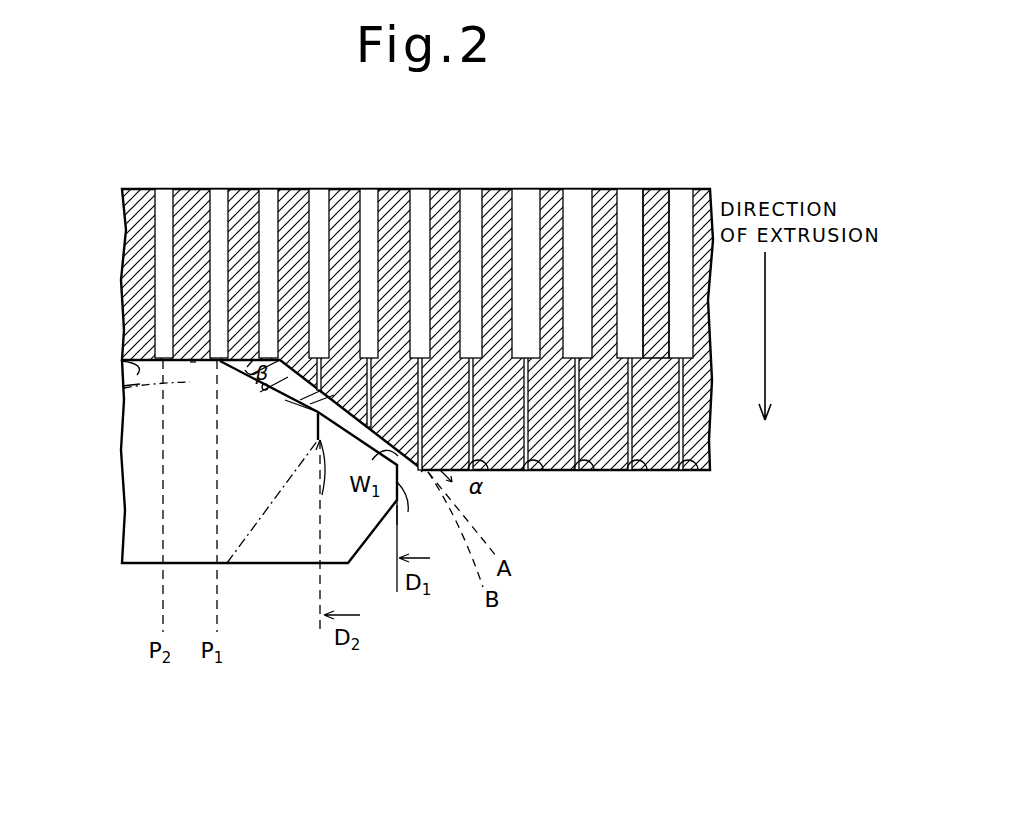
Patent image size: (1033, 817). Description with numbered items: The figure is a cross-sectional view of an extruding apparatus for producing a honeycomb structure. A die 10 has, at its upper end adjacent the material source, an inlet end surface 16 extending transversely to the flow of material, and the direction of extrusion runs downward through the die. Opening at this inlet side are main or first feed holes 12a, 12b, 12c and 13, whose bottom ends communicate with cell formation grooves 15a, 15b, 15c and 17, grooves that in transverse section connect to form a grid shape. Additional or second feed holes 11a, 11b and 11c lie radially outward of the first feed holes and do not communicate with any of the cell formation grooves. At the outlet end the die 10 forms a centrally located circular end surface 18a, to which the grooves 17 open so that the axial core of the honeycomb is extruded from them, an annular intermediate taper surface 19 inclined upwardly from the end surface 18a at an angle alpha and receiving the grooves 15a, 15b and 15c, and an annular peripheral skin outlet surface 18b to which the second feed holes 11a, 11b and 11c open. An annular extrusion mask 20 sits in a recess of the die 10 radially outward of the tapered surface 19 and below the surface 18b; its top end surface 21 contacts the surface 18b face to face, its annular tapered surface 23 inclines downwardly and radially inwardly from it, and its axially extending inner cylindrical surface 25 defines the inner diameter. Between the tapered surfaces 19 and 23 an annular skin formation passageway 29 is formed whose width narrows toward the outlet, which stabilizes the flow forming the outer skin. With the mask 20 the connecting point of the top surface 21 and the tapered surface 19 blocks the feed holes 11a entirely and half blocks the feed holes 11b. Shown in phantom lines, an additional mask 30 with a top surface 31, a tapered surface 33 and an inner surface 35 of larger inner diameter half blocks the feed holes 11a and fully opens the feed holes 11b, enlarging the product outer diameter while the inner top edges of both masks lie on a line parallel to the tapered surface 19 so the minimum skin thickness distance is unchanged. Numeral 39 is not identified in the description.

The die 10 is at (137, 188).
The second feed hole 11a is at (167, 189).
The second feed hole 11b is at (218, 189).
The second feed hole 11c is at (267, 189).
The first feed hole 12a is at (318, 189).
The first feed hole 12b is at (366, 189).
The first feed hole 12c is at (419, 189).
The first feed hole 13 is at (471, 189).
The inlet end surface 16 is at (672, 189).
The cell formation groove 17 is at (533, 470).
The circular end surface 18a is at (570, 470).
The annular peripheral surface 18b is at (122, 370).
The intermediate taper surface 19 is at (428, 472).
The extrusion mask 20 is at (253, 566).
The top end surface 21 is at (201, 366).
The annular tapered surface 23 is at (288, 377).
The inner cylindrical surface 25 is at (396, 520).
The skin formation passageway 29 is at (322, 390).
The additional mask 30 is at (132, 568).
The top surface 31 is at (123, 338).
The tapered surface 33 is at (124, 386).
The inner surface 35 is at (320, 445).
The surface 39 is at (280, 360).
The cell formation groove 15a is at (334, 395).
The cell formation groove 15b is at (323, 443).
The cell formation groove 15c is at (421, 472).